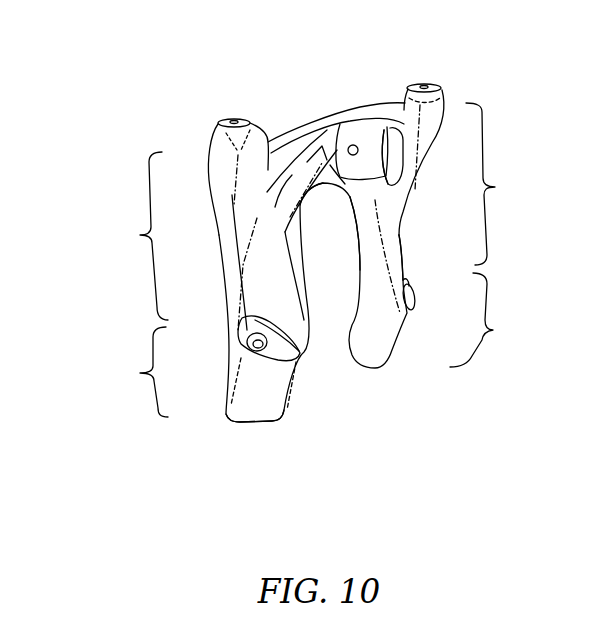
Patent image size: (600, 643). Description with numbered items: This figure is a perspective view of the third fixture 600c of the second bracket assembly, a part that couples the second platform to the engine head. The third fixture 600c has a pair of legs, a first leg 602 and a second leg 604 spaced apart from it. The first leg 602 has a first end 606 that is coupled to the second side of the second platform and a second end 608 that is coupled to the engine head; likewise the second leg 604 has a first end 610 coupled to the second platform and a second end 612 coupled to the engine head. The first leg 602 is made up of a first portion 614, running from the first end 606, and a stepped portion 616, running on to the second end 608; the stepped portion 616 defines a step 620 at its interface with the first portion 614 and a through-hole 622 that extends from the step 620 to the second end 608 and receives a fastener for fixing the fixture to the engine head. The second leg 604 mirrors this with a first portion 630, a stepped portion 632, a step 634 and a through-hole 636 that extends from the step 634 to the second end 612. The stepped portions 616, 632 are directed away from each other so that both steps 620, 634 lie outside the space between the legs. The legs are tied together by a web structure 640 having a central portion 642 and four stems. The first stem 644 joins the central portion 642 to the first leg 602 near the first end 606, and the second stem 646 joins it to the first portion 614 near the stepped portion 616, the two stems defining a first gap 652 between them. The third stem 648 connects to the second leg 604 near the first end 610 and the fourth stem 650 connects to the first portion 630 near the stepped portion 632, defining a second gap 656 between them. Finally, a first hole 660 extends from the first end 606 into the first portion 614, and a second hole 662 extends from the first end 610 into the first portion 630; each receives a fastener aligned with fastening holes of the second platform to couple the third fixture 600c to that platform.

The third fixture 600c is at (124, 58).
The first leg 602 is at (219, 250).
The second leg 604 is at (407, 227).
The first end 606 is at (212, 140).
The second end 608 is at (237, 418).
The first end 610 is at (444, 91).
The second end 612 is at (361, 372).
The first portion 614 is at (137, 236).
The stepped portion 616 is at (137, 372).
The step 620 is at (276, 353).
The through-hole 622 is at (244, 330).
The first portion 630 is at (499, 184).
The stepped portion 632 is at (485, 320).
The step 634 is at (414, 298).
The through-hole 636 is at (407, 284).
The web structure 640 is at (317, 221).
The central portion 642 is at (343, 185).
The first stem 644 is at (276, 135).
The second stem 646 is at (300, 158).
The third stem 648 is at (385, 112).
The fourth stem 650 is at (354, 224).
The first gap 652 is at (276, 197).
The second gap 656 is at (379, 168).
The first hole 660 is at (238, 118).
The second hole 662 is at (436, 83).